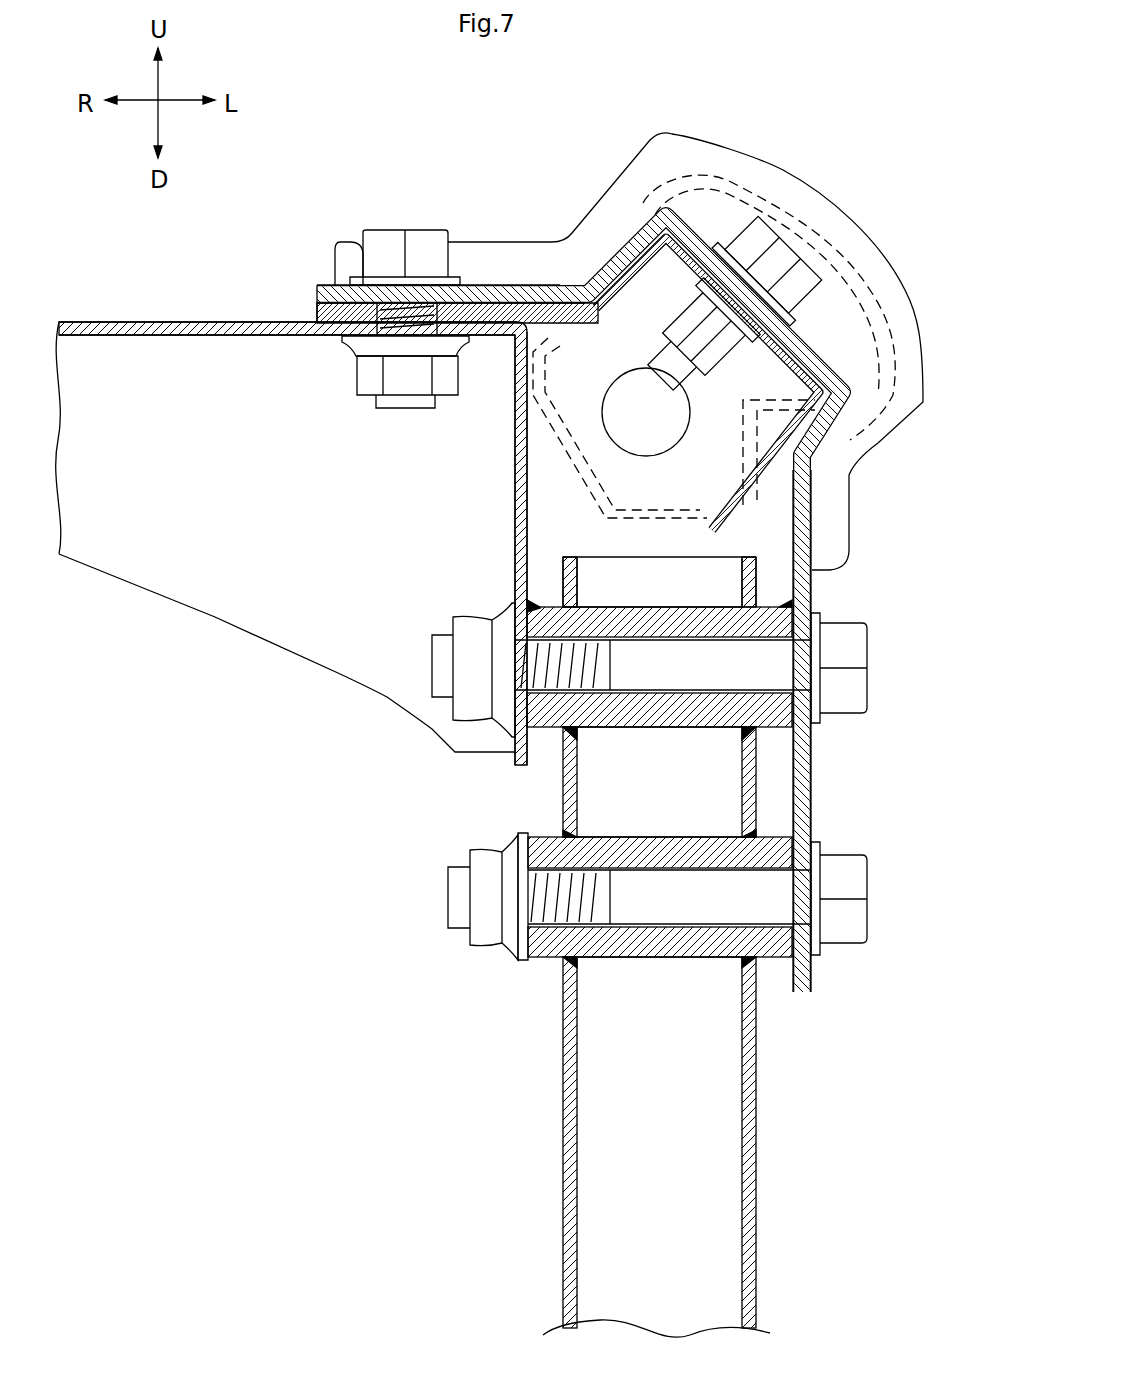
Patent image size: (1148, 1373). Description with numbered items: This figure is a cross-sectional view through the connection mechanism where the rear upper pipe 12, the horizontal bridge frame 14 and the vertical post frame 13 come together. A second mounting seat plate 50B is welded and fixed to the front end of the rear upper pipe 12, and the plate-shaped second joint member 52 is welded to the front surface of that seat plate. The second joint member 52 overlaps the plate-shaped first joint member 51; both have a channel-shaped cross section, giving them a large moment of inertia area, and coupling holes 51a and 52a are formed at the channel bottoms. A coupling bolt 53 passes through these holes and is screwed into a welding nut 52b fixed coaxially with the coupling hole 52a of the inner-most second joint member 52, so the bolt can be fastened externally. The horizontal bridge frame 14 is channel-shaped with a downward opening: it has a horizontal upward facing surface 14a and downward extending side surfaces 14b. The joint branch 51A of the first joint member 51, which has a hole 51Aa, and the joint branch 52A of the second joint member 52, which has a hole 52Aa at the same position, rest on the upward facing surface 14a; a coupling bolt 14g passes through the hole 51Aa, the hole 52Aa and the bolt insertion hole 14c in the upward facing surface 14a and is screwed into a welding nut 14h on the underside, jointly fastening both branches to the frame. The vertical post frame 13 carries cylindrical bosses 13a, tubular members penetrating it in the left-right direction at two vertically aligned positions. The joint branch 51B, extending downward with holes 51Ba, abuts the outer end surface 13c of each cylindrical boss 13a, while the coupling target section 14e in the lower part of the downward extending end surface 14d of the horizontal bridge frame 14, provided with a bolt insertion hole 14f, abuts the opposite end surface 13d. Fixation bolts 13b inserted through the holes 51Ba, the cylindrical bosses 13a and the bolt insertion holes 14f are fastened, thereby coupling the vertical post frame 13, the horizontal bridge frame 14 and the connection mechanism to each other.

The second mounting seat plate 50B is at (810, 193).
The rear upper pipe 12 is at (727, 178).
The horizontal bridge frame 14 is at (118, 322).
The upward facing surface 14a is at (183, 322).
The downward extending side surface 14b is at (215, 606).
The bolt insertion hole 14c is at (387, 342).
The downward extending end surface 14d is at (514, 475).
The coupling target section 14e is at (533, 608).
The bolt insertion hole 14f is at (512, 650).
The coupling bolt 14g is at (423, 242).
The welding nut 14h is at (357, 395).
The first joint member 51 is at (640, 210).
The joint branch 51A is at (482, 285).
The hole 51Aa is at (392, 288).
The coupling hole 51a is at (808, 258).
The joint branch 51B is at (800, 780).
The hole 51Ba is at (803, 648).
The second joint member 52 is at (600, 263).
The joint branch 52A is at (485, 323).
The hole 52Aa is at (317, 292).
The coupling hole 52a is at (662, 326).
The welding nut 52b is at (727, 417).
The coupling bolt 53 is at (797, 284).
The vertical post frame 13 is at (757, 1193).
The cylindrical boss 13a is at (663, 730).
The fixation bolt 13b is at (848, 705).
The outer end surface 13c is at (795, 623).
The opposite end surface 13d is at (527, 713).